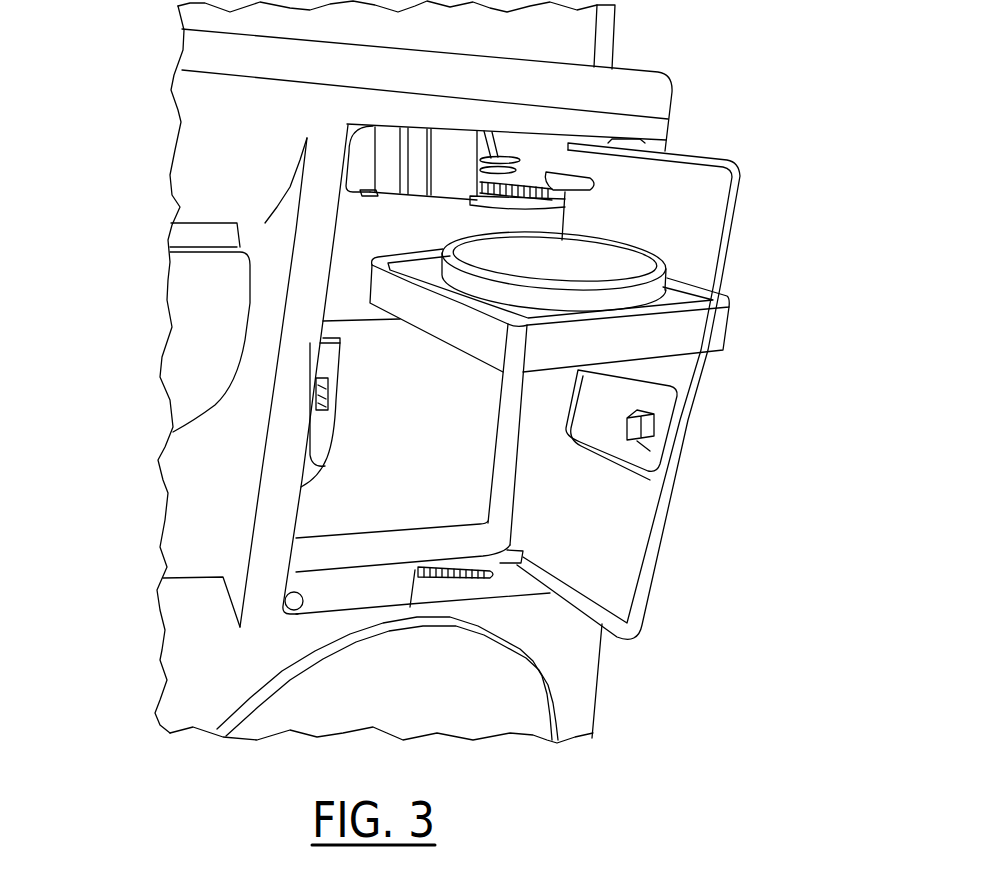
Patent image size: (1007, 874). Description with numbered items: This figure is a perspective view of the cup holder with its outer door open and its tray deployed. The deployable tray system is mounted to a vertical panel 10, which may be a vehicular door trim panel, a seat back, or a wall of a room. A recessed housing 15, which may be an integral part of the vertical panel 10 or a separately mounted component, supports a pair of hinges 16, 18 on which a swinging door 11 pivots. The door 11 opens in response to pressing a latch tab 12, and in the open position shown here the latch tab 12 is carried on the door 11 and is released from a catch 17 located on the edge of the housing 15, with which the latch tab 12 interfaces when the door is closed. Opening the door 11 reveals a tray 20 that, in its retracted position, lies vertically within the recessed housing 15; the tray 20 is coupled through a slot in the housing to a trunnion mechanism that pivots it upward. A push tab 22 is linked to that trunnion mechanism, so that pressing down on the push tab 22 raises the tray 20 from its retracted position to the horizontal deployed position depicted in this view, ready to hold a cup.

The vertical panel 10 is at (218, 177).
The swinging door 11 is at (693, 212).
The latch tab 12 is at (652, 442).
The recessed housing 15 is at (367, 500).
The hinge 16 is at (546, 173).
The catch 17 is at (323, 470).
The hinge 18 is at (495, 577).
The tray 20 is at (705, 335).
The push tab 22 is at (370, 194).